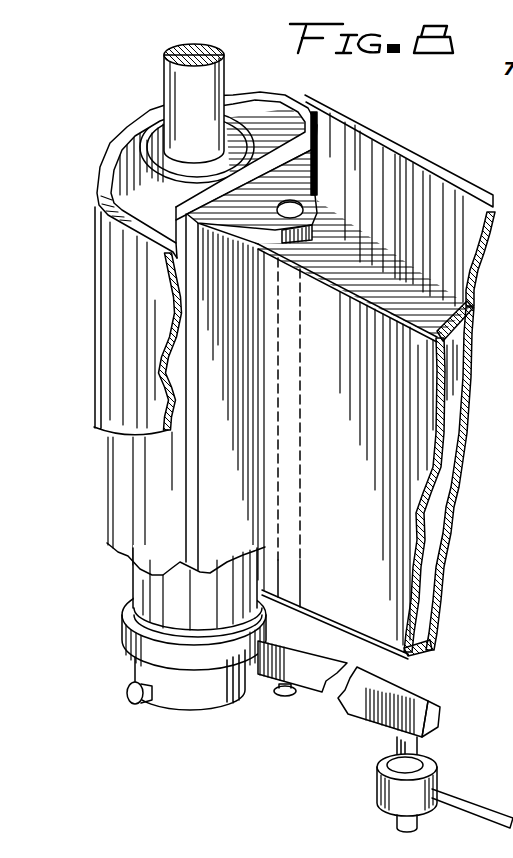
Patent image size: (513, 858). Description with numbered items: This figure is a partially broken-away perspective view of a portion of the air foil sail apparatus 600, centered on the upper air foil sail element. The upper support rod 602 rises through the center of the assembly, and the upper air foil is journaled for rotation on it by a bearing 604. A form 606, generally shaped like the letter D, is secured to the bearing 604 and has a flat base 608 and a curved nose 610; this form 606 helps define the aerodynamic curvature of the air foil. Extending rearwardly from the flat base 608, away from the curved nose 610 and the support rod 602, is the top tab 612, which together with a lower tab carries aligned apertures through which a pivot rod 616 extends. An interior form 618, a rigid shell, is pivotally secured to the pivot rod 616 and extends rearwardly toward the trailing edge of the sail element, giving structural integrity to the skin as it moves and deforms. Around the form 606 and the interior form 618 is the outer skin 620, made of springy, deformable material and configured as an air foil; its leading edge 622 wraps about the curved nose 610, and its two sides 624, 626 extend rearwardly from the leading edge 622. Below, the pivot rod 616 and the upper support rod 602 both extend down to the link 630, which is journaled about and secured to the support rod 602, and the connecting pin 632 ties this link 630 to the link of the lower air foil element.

The air foil sail apparatus 600 is at (391, 120).
The upper support rod 602 is at (165, 77).
The bearing 604 is at (237, 121).
The form 606 is at (287, 88).
The flat base 608 is at (320, 149).
The curved nose 610 is at (113, 455).
The top tab 612 is at (318, 175).
The pivot rod 616 is at (305, 209).
The interior form 618 is at (442, 597).
The outer skin 620 is at (414, 132).
The leading edge 622 is at (119, 132).
The side 624 is at (437, 182).
The side 626 is at (101, 341).
The link 630 is at (430, 696).
The connecting pin 632 is at (397, 742).